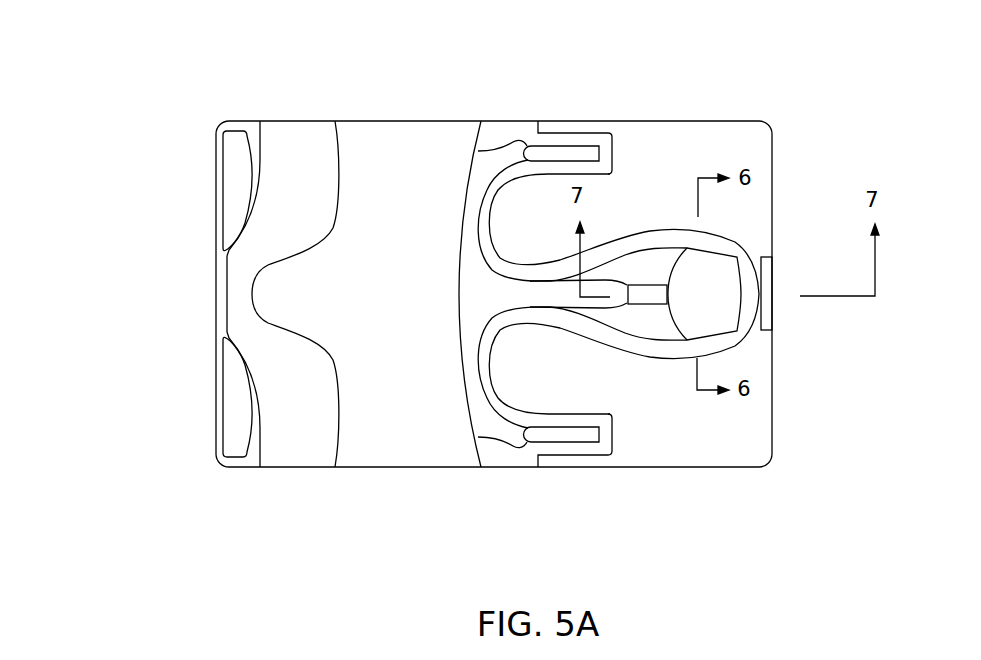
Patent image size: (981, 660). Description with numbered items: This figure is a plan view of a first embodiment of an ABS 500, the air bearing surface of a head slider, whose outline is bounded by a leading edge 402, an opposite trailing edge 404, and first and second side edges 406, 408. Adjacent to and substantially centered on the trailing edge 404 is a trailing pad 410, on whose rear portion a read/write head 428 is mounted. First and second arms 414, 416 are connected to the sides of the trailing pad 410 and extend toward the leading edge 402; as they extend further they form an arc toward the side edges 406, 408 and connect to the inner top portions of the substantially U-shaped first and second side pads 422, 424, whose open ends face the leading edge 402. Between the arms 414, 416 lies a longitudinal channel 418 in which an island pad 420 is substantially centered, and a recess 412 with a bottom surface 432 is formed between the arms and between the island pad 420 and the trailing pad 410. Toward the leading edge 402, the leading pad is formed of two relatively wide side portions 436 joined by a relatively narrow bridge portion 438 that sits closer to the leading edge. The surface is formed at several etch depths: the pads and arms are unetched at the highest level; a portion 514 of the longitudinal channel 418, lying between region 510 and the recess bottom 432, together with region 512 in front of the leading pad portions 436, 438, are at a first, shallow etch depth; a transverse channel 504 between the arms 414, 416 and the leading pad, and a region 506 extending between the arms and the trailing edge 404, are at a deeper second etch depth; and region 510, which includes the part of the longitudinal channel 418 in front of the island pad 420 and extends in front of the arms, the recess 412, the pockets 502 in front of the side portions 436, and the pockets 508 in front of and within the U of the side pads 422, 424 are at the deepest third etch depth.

The ABS 500 is at (432, 85).
The leading edge 402 is at (208, 323).
The trailing edge 404 is at (785, 421).
The first side edge 406 is at (480, 116).
The second side edge 408 is at (439, 472).
The trailing pad 410 is at (752, 322).
The recess 412 is at (750, 222).
The first arm 414 is at (650, 242).
The second arm 416 is at (585, 328).
The longitudinal channel 418 is at (504, 298).
The island pad 420 is at (642, 300).
The first side pad 422 is at (613, 140).
The second side pad 424 is at (612, 442).
The read/write head 428 is at (765, 318).
The bottom surface 432 is at (683, 308).
The side portions 436 is at (279, 206).
The bridge portion 438 is at (237, 295).
The pockets 502 is at (237, 170).
The transverse channel 504 is at (322, 300).
The region 506 is at (732, 152).
The pockets 508 is at (478, 151).
The region 510 is at (553, 293).
The region 512 is at (218, 255).
The portion of longitudinal channel 514 is at (625, 322).